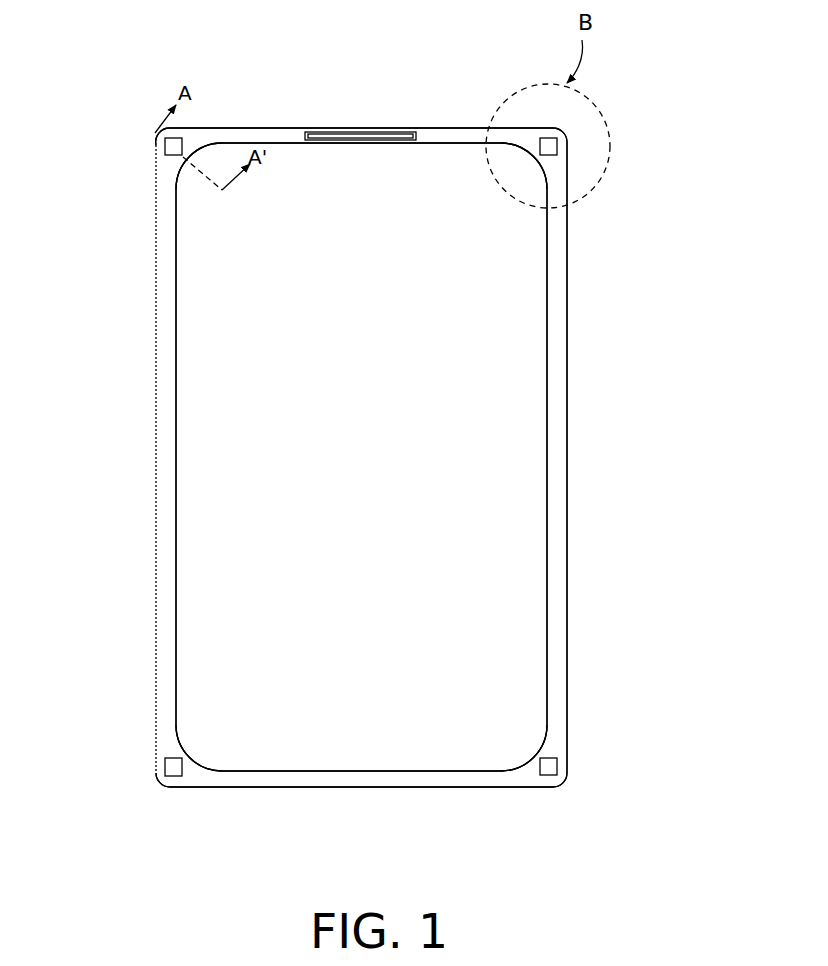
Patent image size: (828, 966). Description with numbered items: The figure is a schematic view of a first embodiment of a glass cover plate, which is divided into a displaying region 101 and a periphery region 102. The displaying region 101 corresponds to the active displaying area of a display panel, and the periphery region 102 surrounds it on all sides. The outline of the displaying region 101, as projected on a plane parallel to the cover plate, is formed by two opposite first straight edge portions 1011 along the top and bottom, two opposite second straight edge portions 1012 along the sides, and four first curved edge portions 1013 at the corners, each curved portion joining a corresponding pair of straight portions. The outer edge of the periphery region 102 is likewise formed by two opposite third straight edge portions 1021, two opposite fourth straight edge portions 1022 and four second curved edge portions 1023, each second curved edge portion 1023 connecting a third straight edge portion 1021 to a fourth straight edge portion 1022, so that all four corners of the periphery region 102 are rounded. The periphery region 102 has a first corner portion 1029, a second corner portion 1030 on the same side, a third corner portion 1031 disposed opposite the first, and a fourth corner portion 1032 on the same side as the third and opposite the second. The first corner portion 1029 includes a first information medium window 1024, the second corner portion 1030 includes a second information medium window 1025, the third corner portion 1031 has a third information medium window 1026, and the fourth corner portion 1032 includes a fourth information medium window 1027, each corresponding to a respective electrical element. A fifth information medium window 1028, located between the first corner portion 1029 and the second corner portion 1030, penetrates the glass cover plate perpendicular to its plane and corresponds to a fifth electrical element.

The displaying region 101 is at (530, 550).
The periphery region 102 is at (558, 583).
The first straight edge portion 1011 is at (450, 143).
The second straight edge portion 1012 is at (175, 433).
The first curved edge portion 1013 is at (180, 175).
The third straight edge portion 1021 is at (316, 128).
The fourth straight edge portion 1022 is at (155, 365).
The second curved edge portion 1023 is at (163, 145).
The first information medium window 1024 is at (568, 150).
The second information medium window 1025 is at (170, 158).
The third information medium window 1026 is at (175, 778).
The fourth information medium window 1027 is at (548, 778).
The fifth information medium window 1028 is at (378, 133).
The first corner portion 1029 is at (528, 140).
The second corner portion 1030 is at (190, 142).
The third corner portion 1031 is at (167, 748).
The fourth corner portion 1032 is at (555, 745).